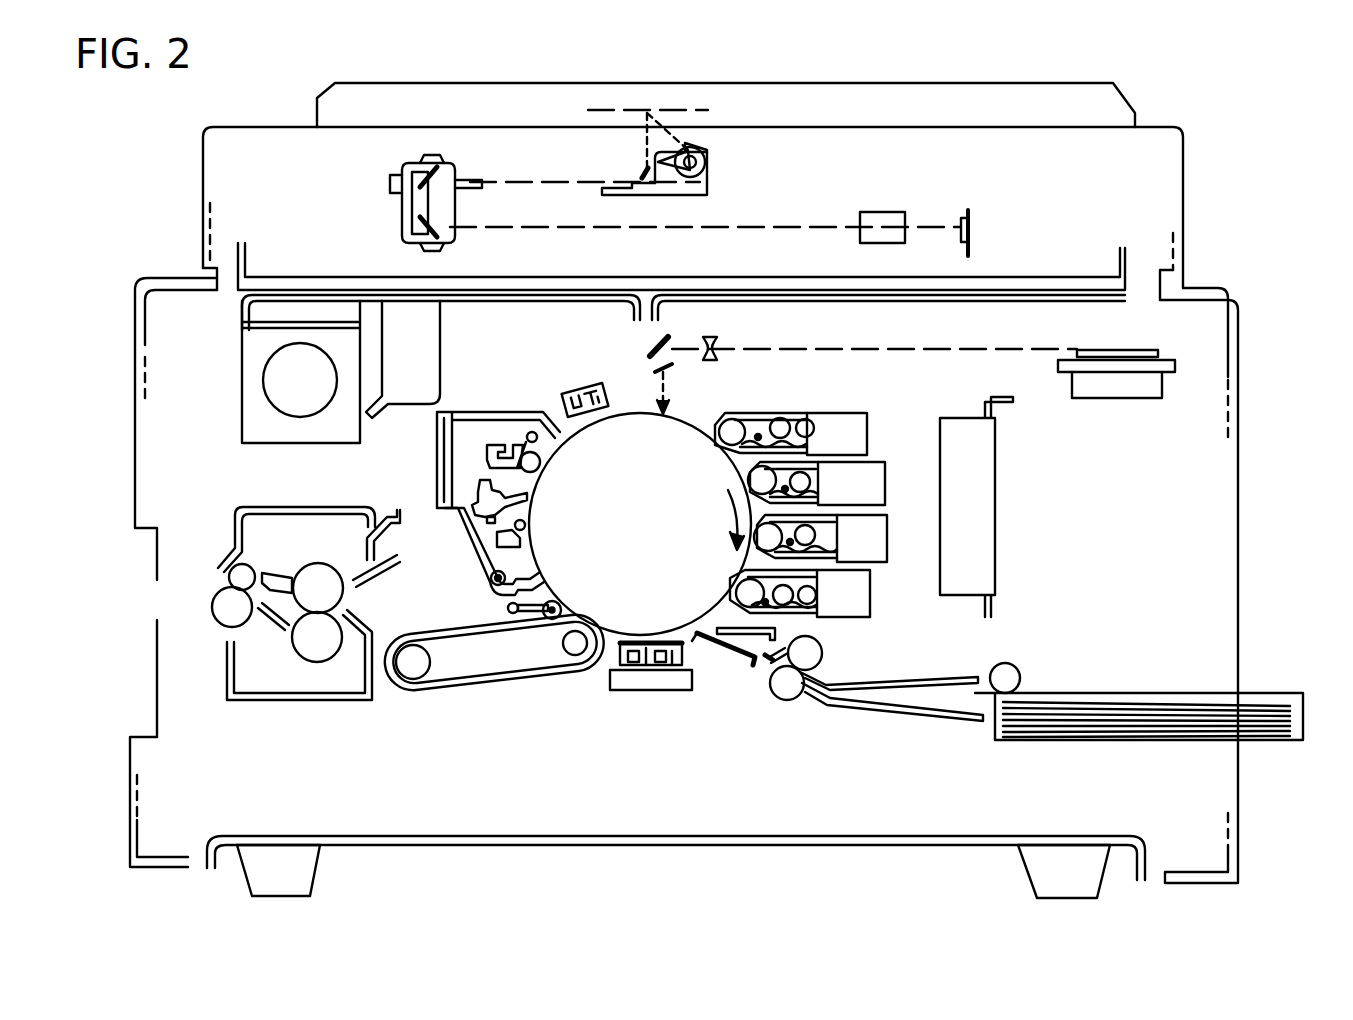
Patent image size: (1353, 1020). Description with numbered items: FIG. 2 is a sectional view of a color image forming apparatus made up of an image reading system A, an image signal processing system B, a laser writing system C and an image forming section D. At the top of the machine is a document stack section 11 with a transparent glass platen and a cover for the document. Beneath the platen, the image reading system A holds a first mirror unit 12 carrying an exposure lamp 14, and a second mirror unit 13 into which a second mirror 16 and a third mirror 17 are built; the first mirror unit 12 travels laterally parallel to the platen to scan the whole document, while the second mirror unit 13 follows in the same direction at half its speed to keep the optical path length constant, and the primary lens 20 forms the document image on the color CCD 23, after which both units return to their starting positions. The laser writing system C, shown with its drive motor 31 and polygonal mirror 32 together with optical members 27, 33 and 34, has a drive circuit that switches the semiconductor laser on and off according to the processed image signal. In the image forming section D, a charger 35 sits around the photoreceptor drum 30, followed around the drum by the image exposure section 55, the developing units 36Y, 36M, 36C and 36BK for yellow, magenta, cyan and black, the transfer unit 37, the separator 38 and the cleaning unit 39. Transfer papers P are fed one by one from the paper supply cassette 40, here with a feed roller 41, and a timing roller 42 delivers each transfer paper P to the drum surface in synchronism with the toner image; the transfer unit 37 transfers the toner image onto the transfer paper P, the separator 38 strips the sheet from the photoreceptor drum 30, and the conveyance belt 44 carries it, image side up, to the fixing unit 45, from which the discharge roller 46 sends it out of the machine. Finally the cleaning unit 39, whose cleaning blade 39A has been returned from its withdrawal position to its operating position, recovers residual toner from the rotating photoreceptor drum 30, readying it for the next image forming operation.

The document stack section 11 is at (783, 116).
The image reading system A is at (258, 201).
The image signal processing system B is at (995, 328).
The laser writing system C is at (618, 330).
The image forming section D is at (660, 108).
The first mirror unit 12 is at (688, 175).
The second mirror unit 13 is at (431, 209).
The exposure lamp 14 is at (697, 163).
The second mirror 16 is at (440, 172).
The third mirror 17 is at (442, 240).
The primary lens 20 is at (879, 212).
The color CCD 23 is at (968, 215).
The reflecting mirror 27 is at (658, 168).
The photoreceptor drum 30 is at (692, 418).
The drive motor 31 is at (1128, 392).
The polygonal mirror 32 is at (1128, 350).
The lens 33 is at (718, 338).
The folding mirror 34 is at (664, 340).
The charger 35 is at (569, 388).
The yellow developing unit 36Y is at (868, 432).
The magenta developing unit 36M is at (917, 462).
The cyan developing unit 36C is at (918, 535).
The black developing unit 36BK is at (870, 590).
The transfer unit 37 is at (658, 700).
The separator 38 is at (610, 663).
The cleaning unit 39 is at (531, 477).
The cleaning blade 39A is at (528, 508).
The paper supply cassette 40 is at (1139, 673).
The paper feed roller 41 is at (1012, 666).
The timing roller 42 is at (792, 700).
The conveyance belt 44 is at (496, 674).
The fixing unit 45 is at (255, 507).
The discharge roller 46 is at (222, 603).
The image exposure section 55 is at (650, 410).
The transfer paper P is at (1112, 712).